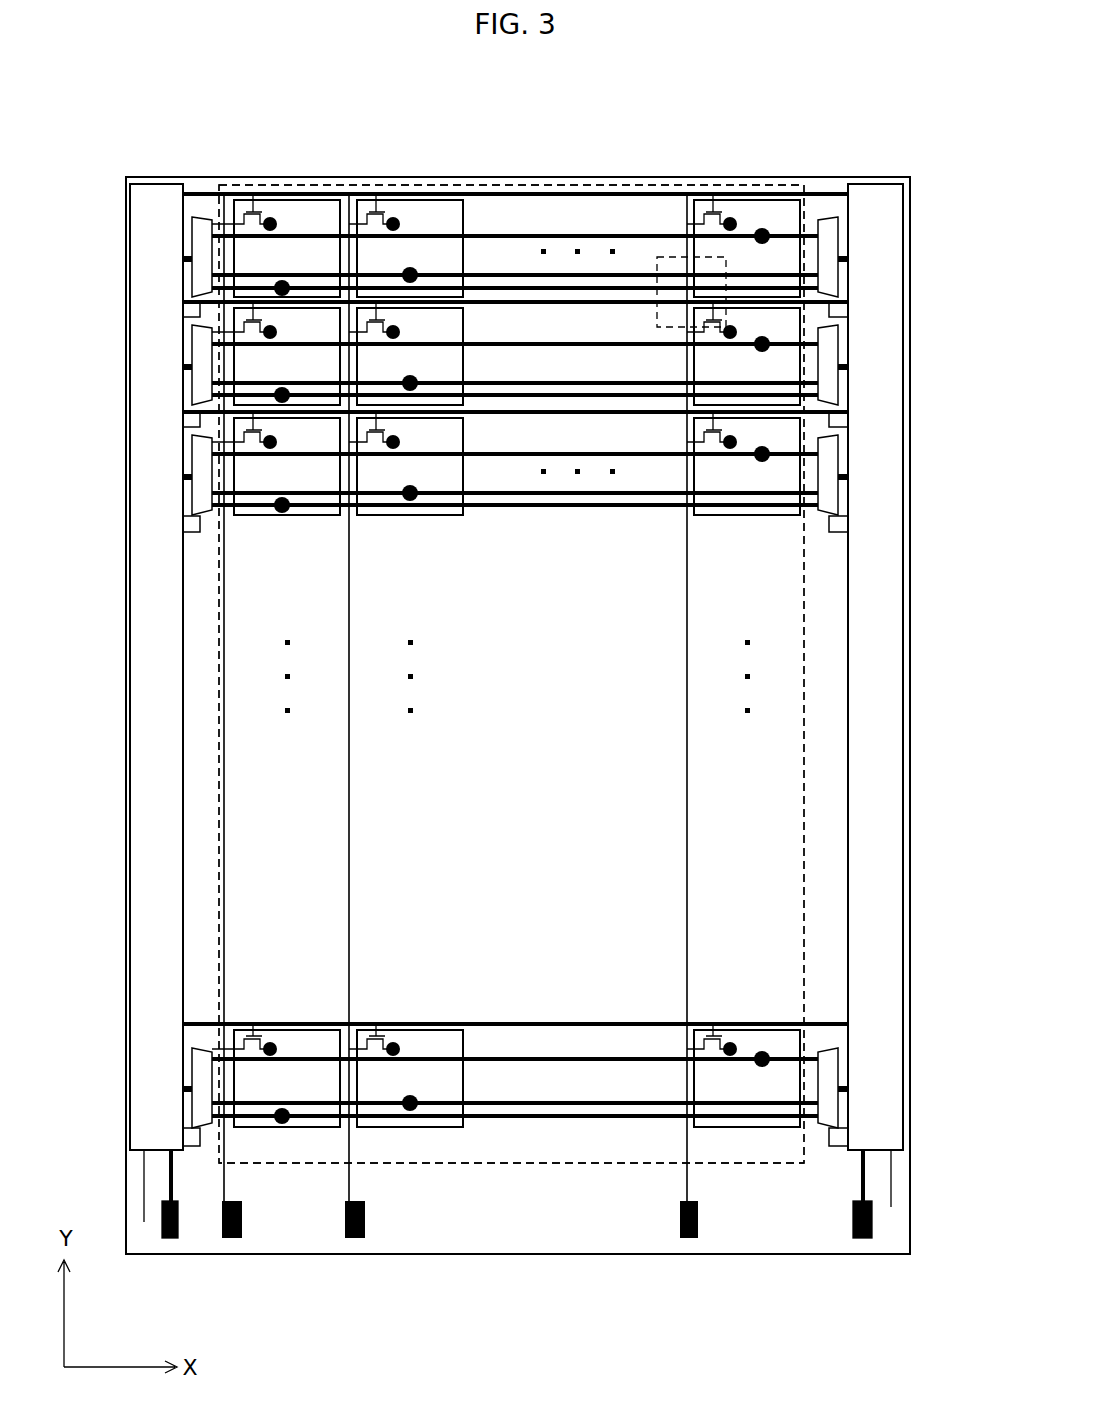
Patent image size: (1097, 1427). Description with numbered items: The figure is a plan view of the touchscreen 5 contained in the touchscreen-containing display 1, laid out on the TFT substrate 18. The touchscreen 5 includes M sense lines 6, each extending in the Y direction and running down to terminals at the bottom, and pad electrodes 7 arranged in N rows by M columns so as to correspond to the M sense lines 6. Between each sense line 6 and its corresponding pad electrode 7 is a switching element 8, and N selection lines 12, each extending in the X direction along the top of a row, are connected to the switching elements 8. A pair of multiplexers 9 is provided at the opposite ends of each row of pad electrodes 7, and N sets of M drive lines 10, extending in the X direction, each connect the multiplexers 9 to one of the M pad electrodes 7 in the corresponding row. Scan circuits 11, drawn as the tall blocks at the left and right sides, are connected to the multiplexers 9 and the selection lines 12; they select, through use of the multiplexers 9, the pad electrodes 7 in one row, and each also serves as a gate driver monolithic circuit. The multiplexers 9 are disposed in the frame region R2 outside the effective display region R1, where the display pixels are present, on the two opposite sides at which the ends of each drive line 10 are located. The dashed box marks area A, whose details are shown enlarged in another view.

The touchscreen-containing display 1 is at (908, 119).
The touchscreen 5 is at (902, 170).
The sense line 6 is at (223, 1180).
The pad electrode 7 is at (305, 317).
The switching element 8 is at (270, 317).
The multiplexer 9 is at (194, 217).
The drive line 10 is at (620, 288).
The scan circuit 11 is at (152, 237).
The selection line 12 is at (533, 302).
The TFT substrate 18 is at (913, 218).
The area A is at (726, 313).
The effective display region R1 is at (500, 1165).
The frame region R2 is at (803, 688).